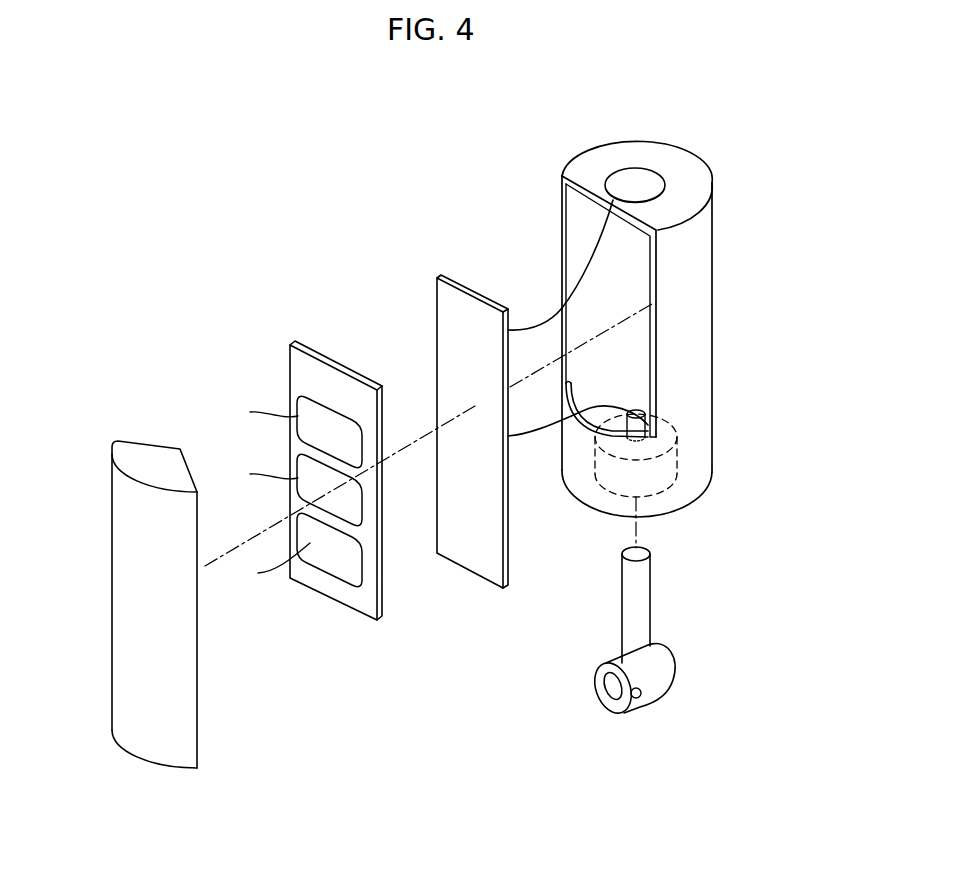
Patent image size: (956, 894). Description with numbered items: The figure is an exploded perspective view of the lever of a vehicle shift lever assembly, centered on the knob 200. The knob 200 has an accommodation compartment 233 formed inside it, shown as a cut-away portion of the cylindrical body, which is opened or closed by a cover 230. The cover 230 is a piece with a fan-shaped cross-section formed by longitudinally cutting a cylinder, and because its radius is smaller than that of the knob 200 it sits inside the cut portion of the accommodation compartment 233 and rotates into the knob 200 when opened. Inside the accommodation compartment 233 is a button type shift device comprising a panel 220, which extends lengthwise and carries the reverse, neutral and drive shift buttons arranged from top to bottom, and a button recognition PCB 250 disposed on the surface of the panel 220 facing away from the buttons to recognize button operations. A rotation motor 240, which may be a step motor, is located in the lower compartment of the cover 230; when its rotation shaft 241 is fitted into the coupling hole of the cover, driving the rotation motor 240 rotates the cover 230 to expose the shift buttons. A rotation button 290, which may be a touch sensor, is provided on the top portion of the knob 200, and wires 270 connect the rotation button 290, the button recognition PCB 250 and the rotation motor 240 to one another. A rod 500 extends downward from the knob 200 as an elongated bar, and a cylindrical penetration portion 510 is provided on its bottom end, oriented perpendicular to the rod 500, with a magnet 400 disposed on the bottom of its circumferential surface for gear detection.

The knob 200 is at (696, 301).
The panel 220 is at (298, 377).
The cover 230 is at (135, 545).
The accommodation compartment 233 is at (636, 357).
The rotation motor 240 is at (662, 464).
The rotation shaft 241 is at (640, 428).
The button recognition PCB 250 is at (452, 332).
The wire 270 is at (537, 327).
The rotation button 290 is at (633, 178).
The magnet 400 is at (646, 694).
The rod 500 is at (645, 595).
The cylindrical penetration portion 510 is at (660, 664).